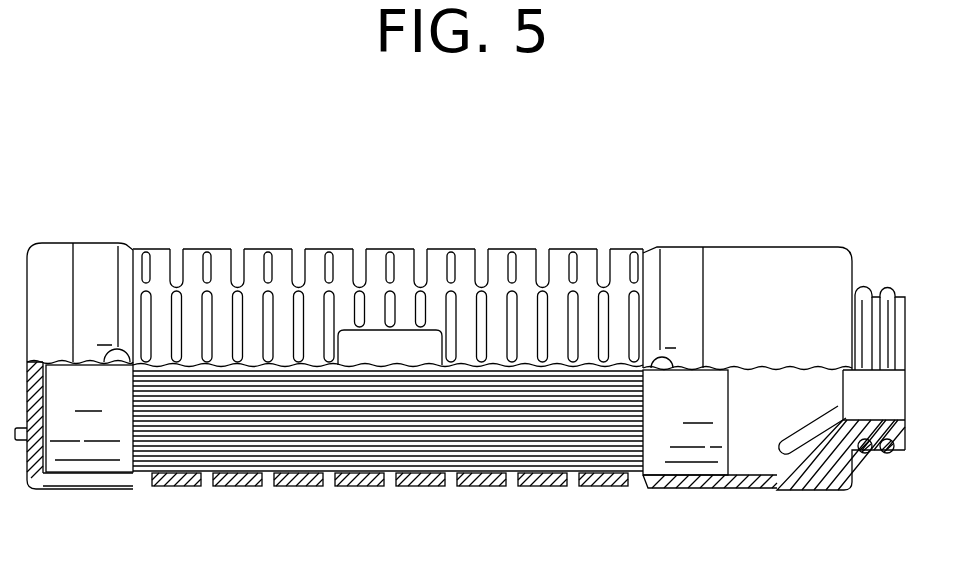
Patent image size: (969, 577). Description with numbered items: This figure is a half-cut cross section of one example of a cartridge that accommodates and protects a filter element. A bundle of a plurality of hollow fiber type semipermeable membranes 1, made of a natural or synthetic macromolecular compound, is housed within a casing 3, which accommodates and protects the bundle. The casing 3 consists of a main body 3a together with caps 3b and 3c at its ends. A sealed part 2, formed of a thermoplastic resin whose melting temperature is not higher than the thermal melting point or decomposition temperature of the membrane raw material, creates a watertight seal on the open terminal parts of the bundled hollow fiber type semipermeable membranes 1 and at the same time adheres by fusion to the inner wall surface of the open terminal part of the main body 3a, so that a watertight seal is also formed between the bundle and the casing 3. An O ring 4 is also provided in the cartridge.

The hollow fiber type semipermeable membranes 1 is at (291, 443).
The sealed part 2 is at (107, 453).
The casing 3 is at (304, 226).
The main body of the casing 3a is at (377, 256).
The cap of the casing 3b is at (740, 258).
The cap of the casing 3c is at (58, 245).
The O ring 4 is at (858, 455).